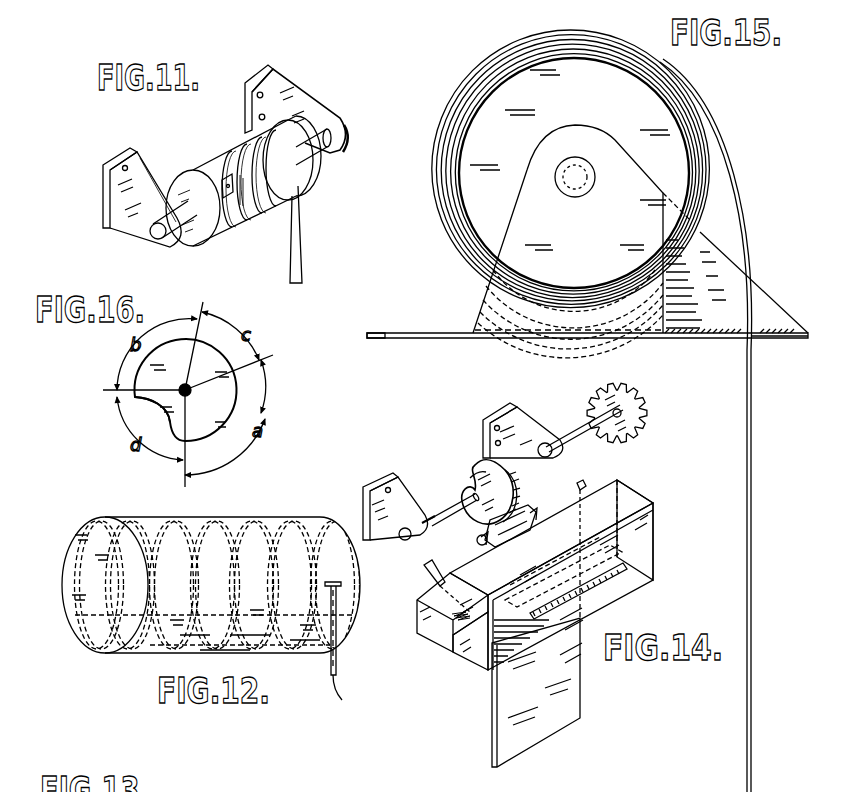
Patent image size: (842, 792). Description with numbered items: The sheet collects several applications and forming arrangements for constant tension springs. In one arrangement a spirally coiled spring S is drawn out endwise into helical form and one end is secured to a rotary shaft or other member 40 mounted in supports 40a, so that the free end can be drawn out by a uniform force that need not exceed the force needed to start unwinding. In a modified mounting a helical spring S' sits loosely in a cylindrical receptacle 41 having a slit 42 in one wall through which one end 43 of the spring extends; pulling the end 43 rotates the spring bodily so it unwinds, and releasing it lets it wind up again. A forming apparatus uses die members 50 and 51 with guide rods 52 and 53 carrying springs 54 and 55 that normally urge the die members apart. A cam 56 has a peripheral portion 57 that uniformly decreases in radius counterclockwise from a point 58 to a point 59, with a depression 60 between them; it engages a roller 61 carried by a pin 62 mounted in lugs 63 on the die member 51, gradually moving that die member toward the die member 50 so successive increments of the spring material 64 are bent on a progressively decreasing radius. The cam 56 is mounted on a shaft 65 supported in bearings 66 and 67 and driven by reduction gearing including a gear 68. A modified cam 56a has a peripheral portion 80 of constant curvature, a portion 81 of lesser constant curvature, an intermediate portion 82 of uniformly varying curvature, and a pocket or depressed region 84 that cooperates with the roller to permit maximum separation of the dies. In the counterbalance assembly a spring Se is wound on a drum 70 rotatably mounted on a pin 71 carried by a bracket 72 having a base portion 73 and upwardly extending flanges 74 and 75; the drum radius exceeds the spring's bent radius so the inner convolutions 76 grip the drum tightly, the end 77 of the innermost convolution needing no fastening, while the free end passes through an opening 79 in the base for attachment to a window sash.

In FIG. 11, the rotary shaft 40 is at (190, 178).
In FIG. 11, the supports 40a is at (107, 205).
In FIG. 11, the spirally coiled spring S is at (308, 234).
In FIG. 12, the cylindrical receptacle 41 is at (70, 610).
In FIG. 12, the slit 42 is at (341, 584).
In FIG. 12, the end of the spring 43 is at (347, 653).
In FIG. 12, the spring S' is at (352, 632).
In FIG. 16, the modified cam 56a is at (186, 390).
In FIG. 16, the peripheral portion 80 is at (255, 386).
In FIG. 16, the peripheral portion 81 is at (157, 356).
In FIG. 16, the peripheral portion 82 is at (232, 351).
In FIG. 16, the pocket or depressed region 84 is at (154, 413).
In FIG. 15, the spring Se is at (478, 80).
In FIG. 15, the drum 70 is at (462, 188).
In FIG. 15, the pin 71 is at (563, 190).
In FIG. 15, the bracket 72 is at (367, 334).
In FIG. 15, the base portion 73 is at (452, 338).
In FIG. 15, the flange 74 is at (490, 312).
In FIG. 15, the flange 75 is at (768, 305).
In FIG. 15, the inner convolutions 76 is at (640, 62).
In FIG. 15, the end of the innermost convolution 77 is at (450, 153).
In FIG. 15, the opening 79 is at (762, 338).
In FIG. 14, the die member 50 is at (472, 658).
In FIG. 14, the die member 51 is at (432, 635).
In FIG. 14, the guide rod 52 is at (424, 566).
In FIG. 14, the guide rod 53 is at (585, 483).
In FIG. 14, the spring 54 is at (450, 622).
In FIG. 14, the spring 55 is at (640, 515).
In FIG. 14, the cam 56 is at (470, 468).
In FIG. 14, the peripheral portion 57 is at (515, 492).
In FIG. 14, the point 58 is at (460, 512).
In FIG. 14, the point 59 is at (462, 474).
In FIG. 14, the depression 60 is at (458, 491).
In FIG. 14, the roller 61 is at (515, 527).
In FIG. 14, the pin 62 is at (477, 541).
In FIG. 14, the lugs 63 is at (528, 520).
In FIG. 14, the spring material 64 is at (500, 735).
In FIG. 14, the shaft 65 is at (578, 432).
In FIG. 14, the bearing 66 is at (380, 487).
In FIG. 14, the bearing 67 is at (495, 412).
In FIG. 14, the gear 68 is at (645, 414).